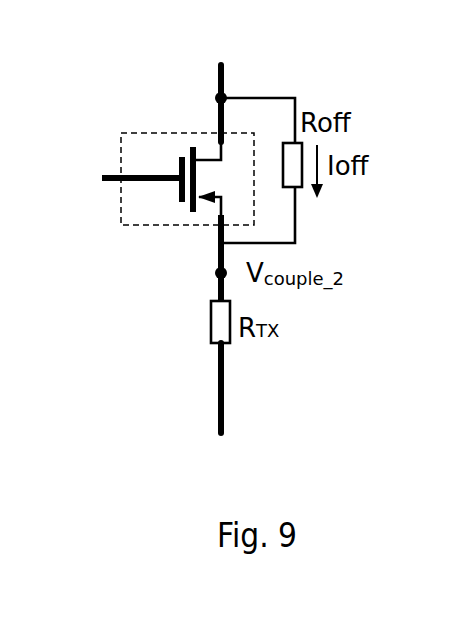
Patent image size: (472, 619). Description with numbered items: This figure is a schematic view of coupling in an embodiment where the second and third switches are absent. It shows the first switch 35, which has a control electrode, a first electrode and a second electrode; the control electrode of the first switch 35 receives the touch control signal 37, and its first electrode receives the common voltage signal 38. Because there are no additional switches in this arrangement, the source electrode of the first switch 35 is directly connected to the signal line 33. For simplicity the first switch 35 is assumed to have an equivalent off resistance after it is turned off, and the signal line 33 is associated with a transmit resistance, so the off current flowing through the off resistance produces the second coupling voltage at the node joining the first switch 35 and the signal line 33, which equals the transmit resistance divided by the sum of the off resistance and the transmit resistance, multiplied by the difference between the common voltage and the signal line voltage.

The common voltage signal 38 is at (211, 71).
The touch control signal 37 is at (113, 177).
The first switch 35 is at (121, 225).
The signal line 33 is at (184, 400).